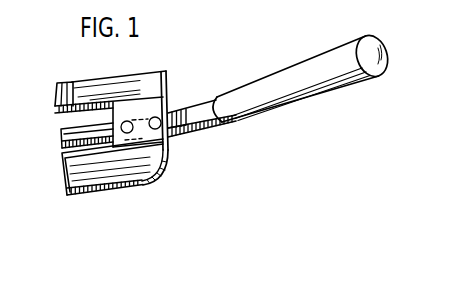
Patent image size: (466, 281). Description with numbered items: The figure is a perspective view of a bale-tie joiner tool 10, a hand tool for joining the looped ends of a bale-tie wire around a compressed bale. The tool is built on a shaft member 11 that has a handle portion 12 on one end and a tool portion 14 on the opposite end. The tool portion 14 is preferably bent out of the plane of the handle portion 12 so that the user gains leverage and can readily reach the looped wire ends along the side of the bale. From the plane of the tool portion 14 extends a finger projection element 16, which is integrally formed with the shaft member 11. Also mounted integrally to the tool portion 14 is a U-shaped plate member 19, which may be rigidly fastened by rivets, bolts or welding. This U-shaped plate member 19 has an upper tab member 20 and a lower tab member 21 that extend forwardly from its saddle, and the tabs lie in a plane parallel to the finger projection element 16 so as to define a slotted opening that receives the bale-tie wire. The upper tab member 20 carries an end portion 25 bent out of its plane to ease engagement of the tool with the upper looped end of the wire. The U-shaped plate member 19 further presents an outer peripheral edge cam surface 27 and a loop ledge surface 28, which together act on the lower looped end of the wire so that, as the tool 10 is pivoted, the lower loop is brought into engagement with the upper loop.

The bale-tie joiner tool 10 is at (216, 54).
The shaft member 11 is at (205, 133).
The handle portion 12 is at (315, 100).
The tool portion 14 is at (54, 108).
The finger projection element 16 is at (63, 123).
The U-shaped plate member 19 is at (159, 72).
The upper tab member 20 is at (100, 92).
The lower tab member 21 is at (105, 170).
The end portion 25 is at (62, 83).
The outer peripheral edge cam surface 27 is at (160, 173).
The loop ledge surface 28 is at (62, 140).